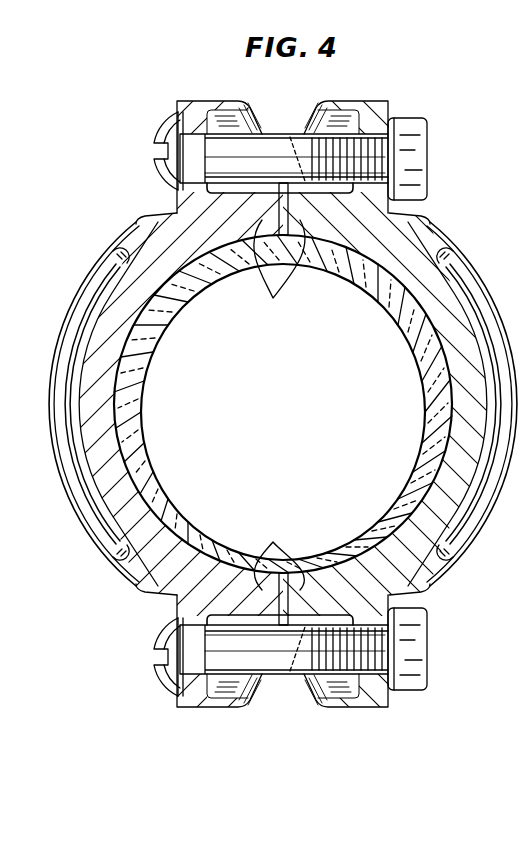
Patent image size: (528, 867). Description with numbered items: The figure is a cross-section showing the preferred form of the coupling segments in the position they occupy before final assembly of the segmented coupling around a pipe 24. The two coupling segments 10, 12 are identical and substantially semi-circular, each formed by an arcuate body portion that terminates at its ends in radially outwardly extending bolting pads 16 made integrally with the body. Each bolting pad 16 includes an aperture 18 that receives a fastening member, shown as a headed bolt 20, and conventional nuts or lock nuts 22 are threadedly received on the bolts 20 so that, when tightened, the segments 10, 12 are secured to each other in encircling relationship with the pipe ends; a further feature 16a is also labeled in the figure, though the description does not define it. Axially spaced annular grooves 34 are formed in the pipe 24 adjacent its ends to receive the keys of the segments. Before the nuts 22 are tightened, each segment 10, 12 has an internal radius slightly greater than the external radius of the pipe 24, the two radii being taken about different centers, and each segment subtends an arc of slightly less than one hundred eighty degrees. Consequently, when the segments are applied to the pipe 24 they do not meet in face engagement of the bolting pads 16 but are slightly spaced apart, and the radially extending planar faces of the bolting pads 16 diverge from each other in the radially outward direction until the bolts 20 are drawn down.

The coupling segment 10 is at (117, 238).
The coupling segment 12 is at (456, 233).
The bolting pad 16 is at (330, 113).
The locating pin of bolt 16a is at (279, 404).
The aperture 18 is at (177, 104).
The headed bolt 20 is at (157, 140).
The nut 22 is at (428, 124).
The pipe 24 is at (132, 402).
The annular groove 34 is at (222, 280).